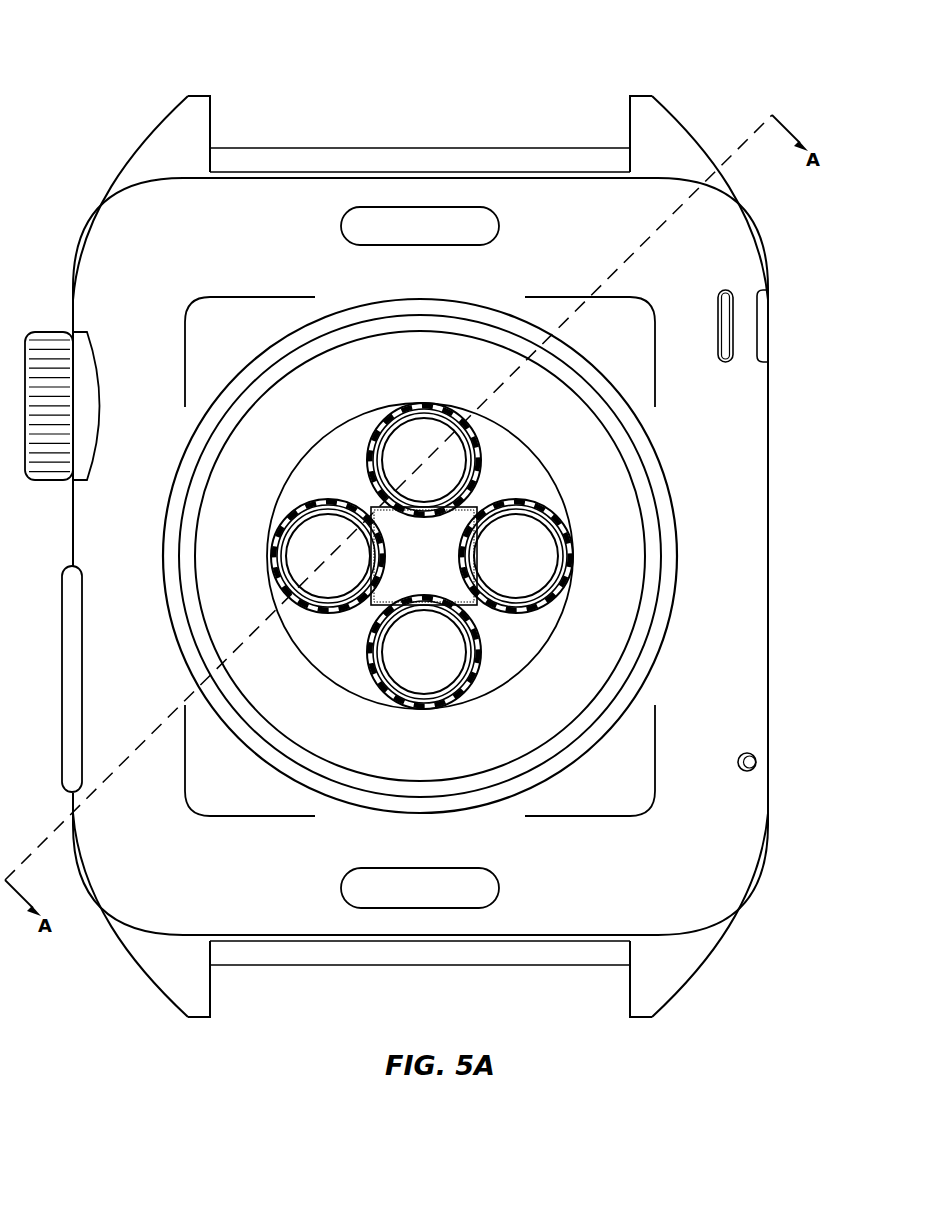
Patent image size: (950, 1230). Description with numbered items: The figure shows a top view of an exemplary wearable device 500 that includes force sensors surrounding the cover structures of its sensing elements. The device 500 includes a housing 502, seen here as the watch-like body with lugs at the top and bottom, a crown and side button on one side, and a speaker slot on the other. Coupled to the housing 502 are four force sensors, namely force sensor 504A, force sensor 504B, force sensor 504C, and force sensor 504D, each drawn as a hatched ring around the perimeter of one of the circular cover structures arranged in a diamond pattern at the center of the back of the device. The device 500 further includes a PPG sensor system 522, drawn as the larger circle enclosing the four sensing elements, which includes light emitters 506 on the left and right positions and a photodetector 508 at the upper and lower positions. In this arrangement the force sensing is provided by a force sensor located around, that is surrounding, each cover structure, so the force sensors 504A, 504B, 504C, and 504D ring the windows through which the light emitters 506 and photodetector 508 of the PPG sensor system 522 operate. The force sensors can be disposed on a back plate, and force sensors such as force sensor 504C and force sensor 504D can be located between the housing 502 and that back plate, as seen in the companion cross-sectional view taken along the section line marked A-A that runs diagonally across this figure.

The device 500 is at (91, 84).
The housing 502 is at (768, 567).
The force sensor 504A is at (548, 607).
The force sensor 504B is at (397, 690).
The force sensor 504C is at (289, 598).
The force sensor 504D is at (474, 440).
The light emitters 506 is at (303, 538).
The photodetector 508 is at (427, 430).
The PPG sensor system 522 is at (353, 414).